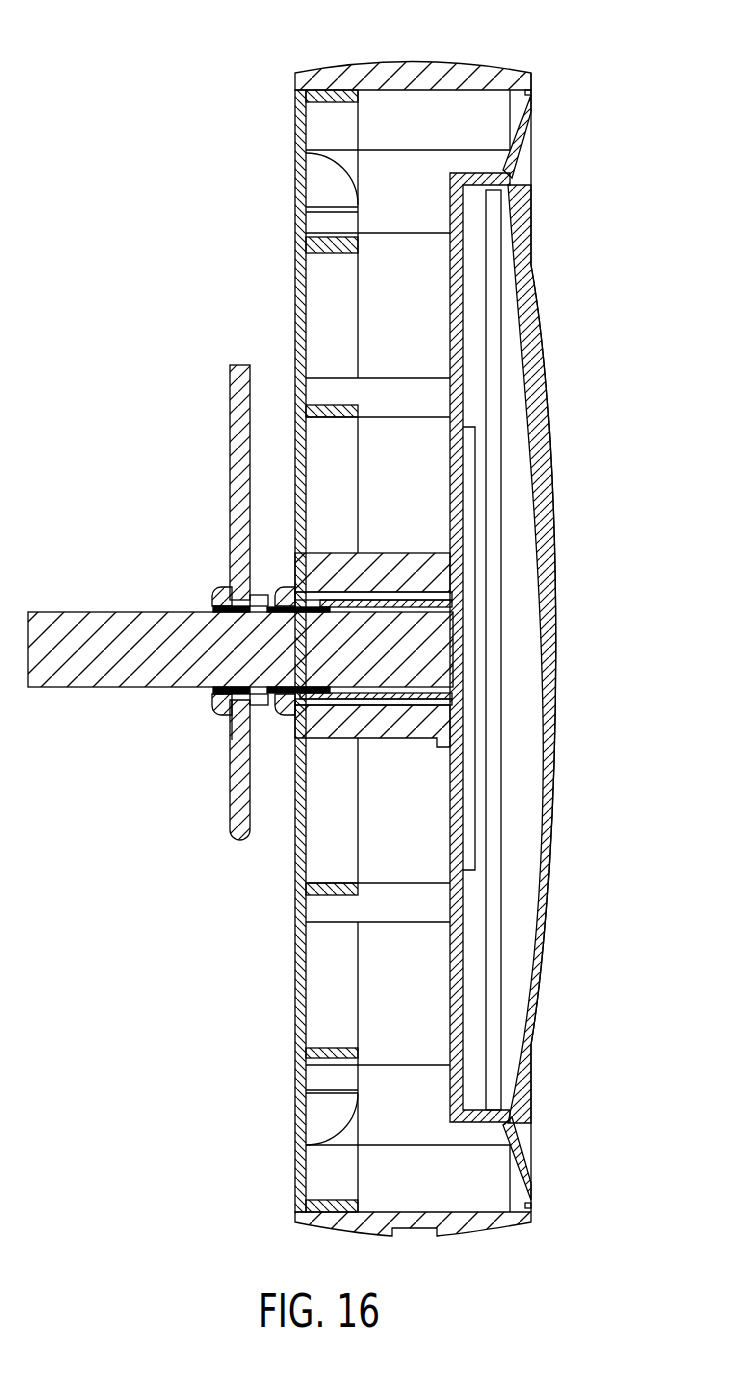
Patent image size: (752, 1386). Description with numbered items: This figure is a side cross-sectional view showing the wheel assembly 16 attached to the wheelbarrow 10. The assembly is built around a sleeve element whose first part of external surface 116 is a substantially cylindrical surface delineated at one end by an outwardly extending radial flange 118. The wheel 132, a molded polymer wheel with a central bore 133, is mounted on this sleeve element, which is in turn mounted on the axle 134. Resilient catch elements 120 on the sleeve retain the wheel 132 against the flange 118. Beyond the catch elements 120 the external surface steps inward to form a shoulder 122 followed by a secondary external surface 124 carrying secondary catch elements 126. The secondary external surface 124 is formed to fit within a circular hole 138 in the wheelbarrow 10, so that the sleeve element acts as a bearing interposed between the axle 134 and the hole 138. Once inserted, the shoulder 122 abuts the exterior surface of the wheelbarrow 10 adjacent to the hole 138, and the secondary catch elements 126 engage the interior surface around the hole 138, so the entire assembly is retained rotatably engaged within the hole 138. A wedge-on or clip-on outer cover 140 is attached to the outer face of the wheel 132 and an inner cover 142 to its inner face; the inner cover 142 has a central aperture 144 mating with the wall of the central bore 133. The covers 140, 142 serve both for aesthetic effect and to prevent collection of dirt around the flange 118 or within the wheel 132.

The wheelbarrow 10 is at (237, 395).
The wheel assembly 16 is at (583, 244).
The first part of external surface 116 is at (404, 703).
The radial flange 118 is at (457, 713).
The resilient catch elements 120 is at (268, 703).
The shoulder 122 is at (237, 732).
The secondary external surface 124 is at (231, 712).
The secondary catch elements 126 is at (212, 705).
The wheel 132 is at (482, 75).
The central bore 133 is at (385, 712).
The axle 134 is at (75, 690).
The circular hole 138 is at (242, 598).
The outer cover 140 is at (550, 837).
The inner cover 142 is at (298, 997).
The central aperture 144 is at (293, 722).